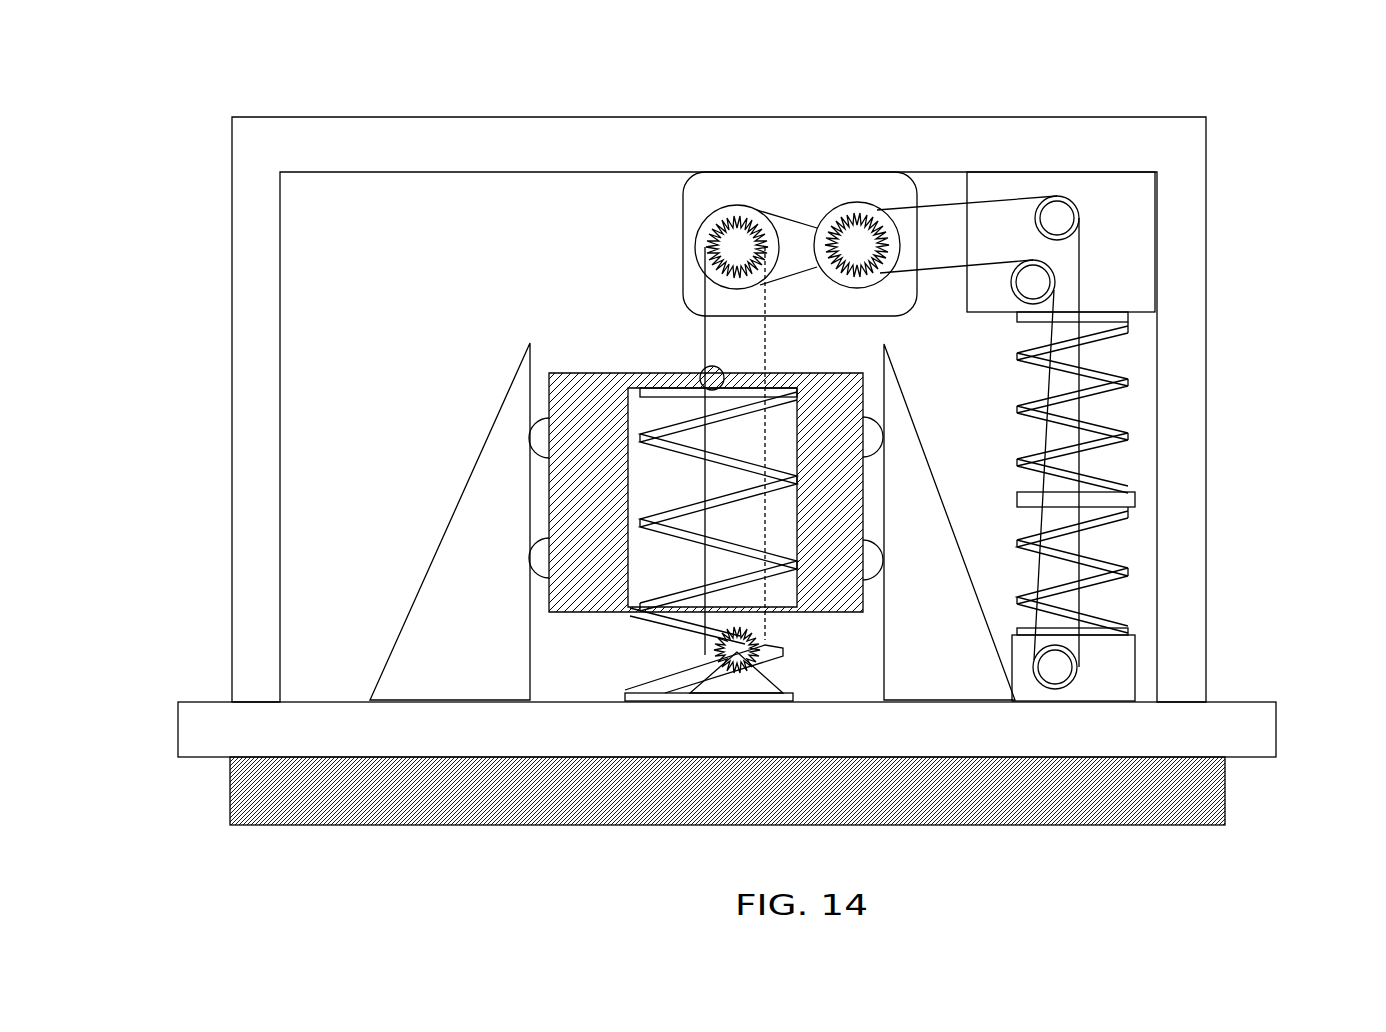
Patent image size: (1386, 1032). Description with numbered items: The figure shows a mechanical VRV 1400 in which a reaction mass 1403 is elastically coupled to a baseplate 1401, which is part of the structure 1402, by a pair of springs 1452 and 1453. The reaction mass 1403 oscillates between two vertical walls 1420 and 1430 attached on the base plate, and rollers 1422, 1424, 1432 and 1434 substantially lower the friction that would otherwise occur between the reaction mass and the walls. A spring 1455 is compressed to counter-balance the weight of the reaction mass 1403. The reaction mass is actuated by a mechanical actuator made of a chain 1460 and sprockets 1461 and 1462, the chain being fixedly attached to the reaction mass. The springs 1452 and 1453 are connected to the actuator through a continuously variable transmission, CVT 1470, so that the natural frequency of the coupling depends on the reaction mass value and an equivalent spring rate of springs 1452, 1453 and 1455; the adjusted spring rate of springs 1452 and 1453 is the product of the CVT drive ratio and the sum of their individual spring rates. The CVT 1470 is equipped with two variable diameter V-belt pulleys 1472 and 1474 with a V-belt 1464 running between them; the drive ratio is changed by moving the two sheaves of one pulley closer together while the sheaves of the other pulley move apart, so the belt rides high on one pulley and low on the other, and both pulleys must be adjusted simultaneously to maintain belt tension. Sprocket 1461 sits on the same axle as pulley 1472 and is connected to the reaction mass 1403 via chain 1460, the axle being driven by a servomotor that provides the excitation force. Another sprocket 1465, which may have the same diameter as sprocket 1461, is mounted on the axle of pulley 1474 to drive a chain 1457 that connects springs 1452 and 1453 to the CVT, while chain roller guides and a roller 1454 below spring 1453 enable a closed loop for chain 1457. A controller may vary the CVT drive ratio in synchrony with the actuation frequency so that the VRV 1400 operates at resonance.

The mechanical VRV 1400 is at (1235, 66).
The baseplate 1401 is at (180, 727).
The structure 1402 is at (292, 130).
The reaction mass 1403 is at (580, 382).
The vertical wall 1420 is at (447, 524).
The roller 1422 is at (535, 437).
The roller 1424 is at (535, 560).
The vertical wall 1430 is at (930, 457).
The roller 1432 is at (877, 437).
The roller 1434 is at (877, 560).
The spring 1452 is at (1130, 380).
The spring 1453 is at (1130, 560).
The roller 1454 is at (1040, 668).
The spring 1455 is at (660, 505).
The chain 1457 is at (1079, 260).
The chain 1460 is at (767, 338).
The sprocket 1461 is at (735, 248).
The sprocket 1462 is at (722, 650).
The V-belt 1464 is at (795, 210).
The sprocket 1465 is at (858, 240).
The continuously variable transmission 1470 is at (683, 240).
The variable diameter V-belt pulley 1472 is at (737, 231).
The variable diameter V-belt pulley 1474 is at (857, 261).